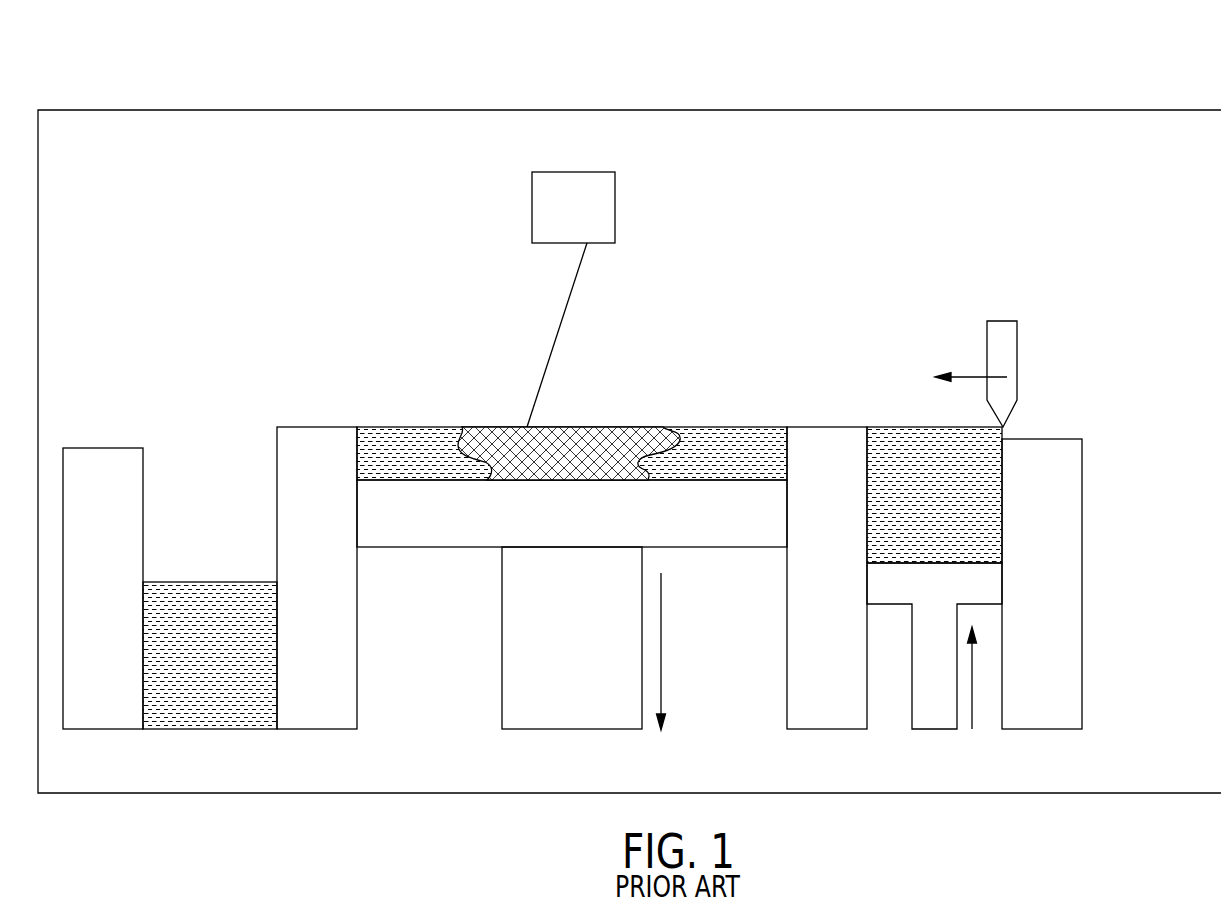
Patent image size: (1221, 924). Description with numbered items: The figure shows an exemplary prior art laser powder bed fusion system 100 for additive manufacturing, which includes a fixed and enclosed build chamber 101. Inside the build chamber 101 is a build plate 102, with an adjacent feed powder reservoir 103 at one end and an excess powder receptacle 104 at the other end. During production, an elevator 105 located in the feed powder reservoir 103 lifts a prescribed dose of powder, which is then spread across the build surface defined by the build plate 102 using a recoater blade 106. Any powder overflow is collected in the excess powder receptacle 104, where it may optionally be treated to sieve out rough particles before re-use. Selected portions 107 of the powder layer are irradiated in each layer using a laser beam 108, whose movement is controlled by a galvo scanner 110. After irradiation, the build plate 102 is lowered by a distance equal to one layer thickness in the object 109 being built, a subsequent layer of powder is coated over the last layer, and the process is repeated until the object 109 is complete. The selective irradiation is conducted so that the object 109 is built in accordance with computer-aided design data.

The system 100 is at (396, 83).
The build chamber 101 is at (1053, 110).
The build plate 102 is at (724, 537).
The feed powder reservoir 103 is at (900, 440).
The excess powder receptacle 104 is at (98, 462).
The elevator 105 is at (992, 584).
The recoater blade 106 is at (1005, 357).
The selected portions of the powder layer 107 is at (580, 411).
The laser beam 108 is at (572, 292).
The object 109 is at (640, 440).
The galvo scanner 110 is at (585, 172).